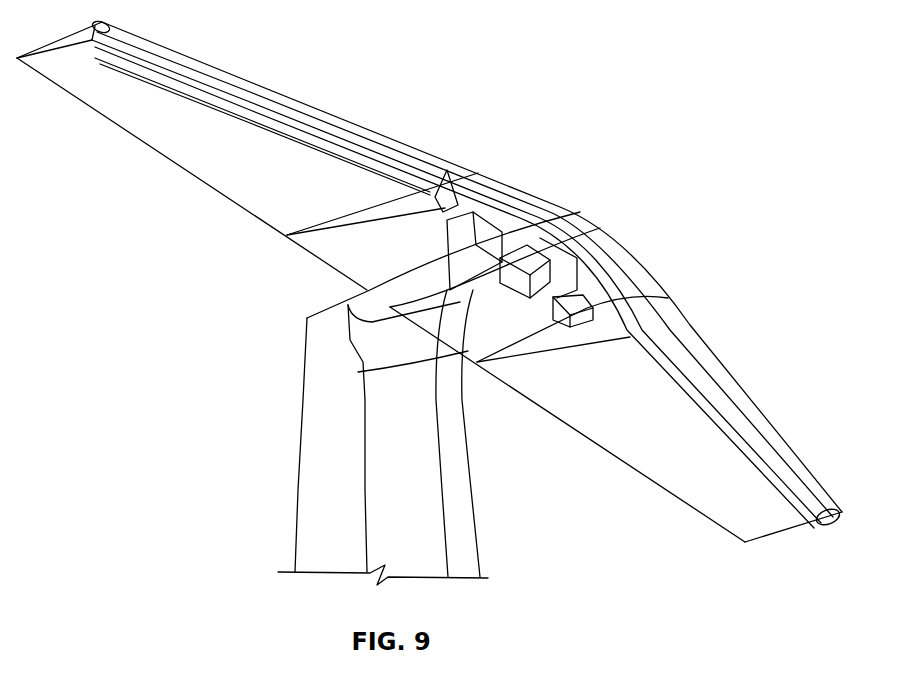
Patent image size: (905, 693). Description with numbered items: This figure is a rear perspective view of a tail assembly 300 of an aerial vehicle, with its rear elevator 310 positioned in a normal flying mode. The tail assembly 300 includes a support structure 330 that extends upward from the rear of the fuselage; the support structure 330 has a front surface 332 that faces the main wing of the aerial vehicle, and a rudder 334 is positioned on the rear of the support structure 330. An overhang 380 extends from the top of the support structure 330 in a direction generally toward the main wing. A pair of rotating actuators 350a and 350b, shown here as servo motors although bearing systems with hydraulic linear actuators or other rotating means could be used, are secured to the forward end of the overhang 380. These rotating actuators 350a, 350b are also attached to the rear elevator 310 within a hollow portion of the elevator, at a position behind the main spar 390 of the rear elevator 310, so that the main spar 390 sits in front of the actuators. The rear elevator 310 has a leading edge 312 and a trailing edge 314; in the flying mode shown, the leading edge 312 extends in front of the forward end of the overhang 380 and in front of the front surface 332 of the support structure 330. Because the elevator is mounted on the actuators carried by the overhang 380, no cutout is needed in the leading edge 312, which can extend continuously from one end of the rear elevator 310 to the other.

The tail assembly 300 is at (652, 70).
The rear elevator 310 is at (117, 100).
The leading edge 312 is at (660, 278).
The trailing edge 314 is at (175, 165).
The support structure 330 is at (378, 507).
The front surface 332 is at (472, 507).
The rudder 334 is at (318, 365).
The rotating actuator 350a is at (482, 205).
The rotating actuator 350b is at (555, 245).
The overhang 380 is at (443, 243).
The main spar 390 is at (730, 412).